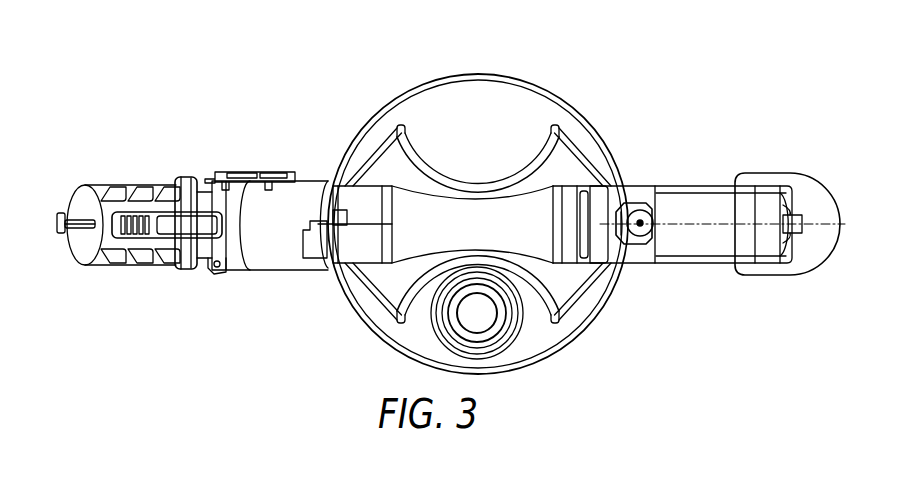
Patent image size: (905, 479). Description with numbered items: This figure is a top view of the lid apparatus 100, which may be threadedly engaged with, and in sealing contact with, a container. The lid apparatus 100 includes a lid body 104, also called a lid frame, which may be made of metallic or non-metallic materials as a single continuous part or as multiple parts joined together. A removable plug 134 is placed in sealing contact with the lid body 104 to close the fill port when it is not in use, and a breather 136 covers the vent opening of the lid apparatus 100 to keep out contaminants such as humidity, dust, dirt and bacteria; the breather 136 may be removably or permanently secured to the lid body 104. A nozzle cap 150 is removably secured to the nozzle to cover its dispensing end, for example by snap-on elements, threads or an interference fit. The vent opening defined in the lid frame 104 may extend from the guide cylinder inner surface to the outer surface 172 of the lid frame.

The lid apparatus 100 is at (677, 78).
The lid body 104 is at (350, 288).
The removable plug 134 is at (479, 333).
The breather 136 is at (631, 203).
The nozzle cap 150 is at (101, 186).
The outer surface 172 is at (678, 251).